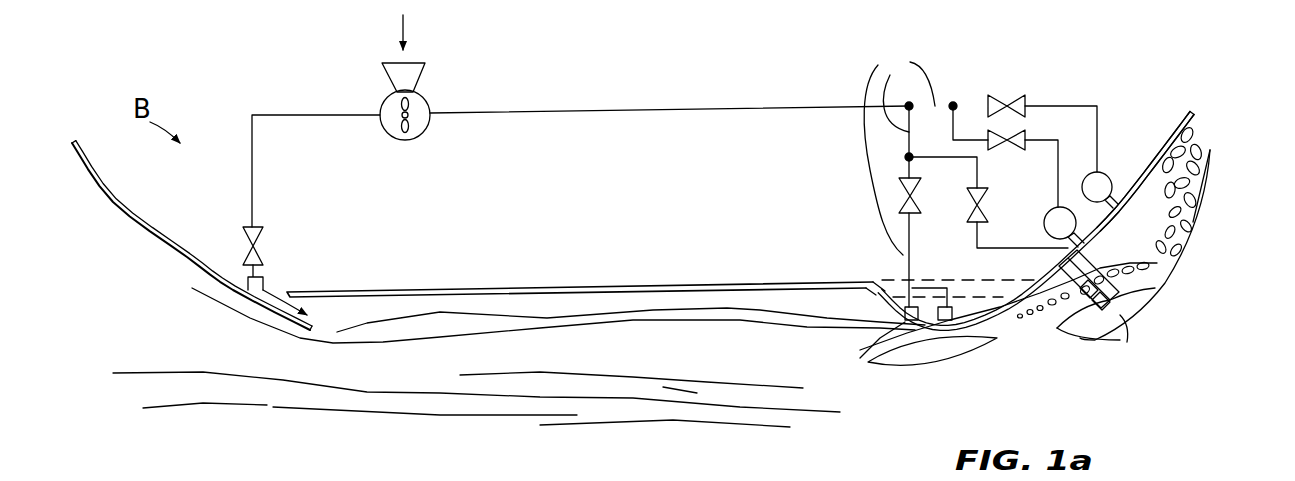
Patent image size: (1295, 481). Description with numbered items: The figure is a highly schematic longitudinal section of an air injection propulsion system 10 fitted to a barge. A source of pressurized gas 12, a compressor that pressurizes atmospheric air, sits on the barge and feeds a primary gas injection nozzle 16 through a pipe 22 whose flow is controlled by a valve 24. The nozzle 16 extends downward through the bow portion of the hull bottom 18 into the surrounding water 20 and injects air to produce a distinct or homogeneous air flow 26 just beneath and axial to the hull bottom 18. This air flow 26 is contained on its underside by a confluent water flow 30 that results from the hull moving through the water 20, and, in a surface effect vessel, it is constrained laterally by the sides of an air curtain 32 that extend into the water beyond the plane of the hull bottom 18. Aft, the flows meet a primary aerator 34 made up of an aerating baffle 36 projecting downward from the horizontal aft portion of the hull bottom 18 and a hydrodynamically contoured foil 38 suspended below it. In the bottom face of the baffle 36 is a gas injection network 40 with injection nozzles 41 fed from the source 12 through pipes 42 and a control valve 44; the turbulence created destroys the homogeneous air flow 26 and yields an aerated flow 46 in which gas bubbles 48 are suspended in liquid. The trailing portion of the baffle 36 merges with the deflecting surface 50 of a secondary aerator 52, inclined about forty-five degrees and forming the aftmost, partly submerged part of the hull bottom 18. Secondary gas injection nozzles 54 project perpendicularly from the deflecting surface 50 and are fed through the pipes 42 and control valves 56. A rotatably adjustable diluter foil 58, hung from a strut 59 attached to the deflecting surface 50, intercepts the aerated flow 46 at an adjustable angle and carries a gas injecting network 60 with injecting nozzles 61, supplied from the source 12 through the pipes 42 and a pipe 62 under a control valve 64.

The air injection propulsion system 10 is at (658, 97).
The source of pressurized gas 12 is at (430, 97).
The primary gas injection nozzle 16 is at (263, 281).
The hull bottom 18 is at (535, 285).
The surrounding water 20 is at (188, 362).
The pipe 22 is at (276, 115).
The valve 24 is at (263, 246).
The air flow 26 is at (353, 312).
The water flow 30 is at (633, 320).
The air curtain 32 is at (112, 205).
The primary aerator 34 is at (860, 338).
The aerating baffle 36 is at (857, 293).
The hydrodynamically contoured foil 38 is at (963, 358).
The gas injection network 40 is at (903, 295).
The injection nozzles 41 is at (871, 353).
The pipes 42 is at (920, 148).
The control valve 44 is at (912, 203).
The aerated flow 46 is at (1015, 312).
The gas bubbles 48 is at (1193, 230).
The deflecting surface 50 is at (1197, 118).
The secondary aerator 52 is at (1043, 324).
The secondary gas injection nozzles 54 is at (1105, 173).
The control valves 56 is at (1012, 130).
The diluter foil 58 is at (1127, 298).
The strut 59 is at (1157, 263).
The gas injecting network 60 is at (1133, 288).
The injecting nozzles 61 is at (1112, 306).
The pipe 62 is at (1000, 255).
The control valve 64 is at (970, 213).